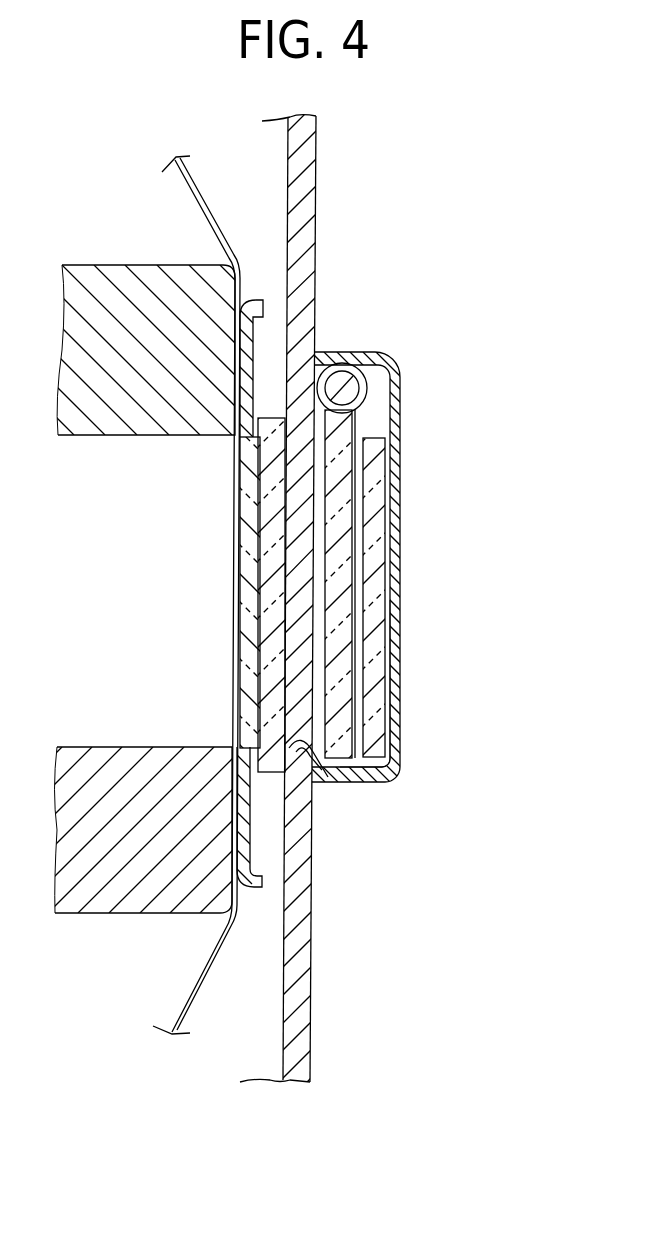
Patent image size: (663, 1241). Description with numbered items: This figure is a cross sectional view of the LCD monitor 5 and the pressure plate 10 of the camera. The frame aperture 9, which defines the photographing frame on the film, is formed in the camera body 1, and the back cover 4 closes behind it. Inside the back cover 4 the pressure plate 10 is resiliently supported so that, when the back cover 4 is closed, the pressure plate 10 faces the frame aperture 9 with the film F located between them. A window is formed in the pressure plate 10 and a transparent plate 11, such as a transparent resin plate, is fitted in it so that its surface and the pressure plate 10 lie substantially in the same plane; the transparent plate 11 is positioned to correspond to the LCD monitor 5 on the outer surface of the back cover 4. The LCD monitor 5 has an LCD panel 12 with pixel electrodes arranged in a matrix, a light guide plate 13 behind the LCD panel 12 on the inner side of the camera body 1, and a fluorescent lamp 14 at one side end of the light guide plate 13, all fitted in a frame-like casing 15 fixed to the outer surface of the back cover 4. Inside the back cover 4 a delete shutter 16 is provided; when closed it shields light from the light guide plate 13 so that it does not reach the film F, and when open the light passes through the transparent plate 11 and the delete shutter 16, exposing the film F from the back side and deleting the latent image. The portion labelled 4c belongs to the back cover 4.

The camera body 1 is at (115, 275).
The frame aperture 9 is at (86, 746).
The back cover 4 is at (306, 178).
The bent tab of mounting plate 4c is at (313, 752).
The LCD monitor 5 is at (404, 364).
The pressure plate 10 is at (247, 386).
The transparent plate 11 is at (240, 546).
The LCD panel 12 is at (374, 668).
The light guide plate 13 is at (342, 562).
The fluorescent lamp 14 is at (356, 395).
The frame-like casing 15 is at (401, 758).
The delete shutter 16 is at (262, 618).
The film F is at (206, 202).